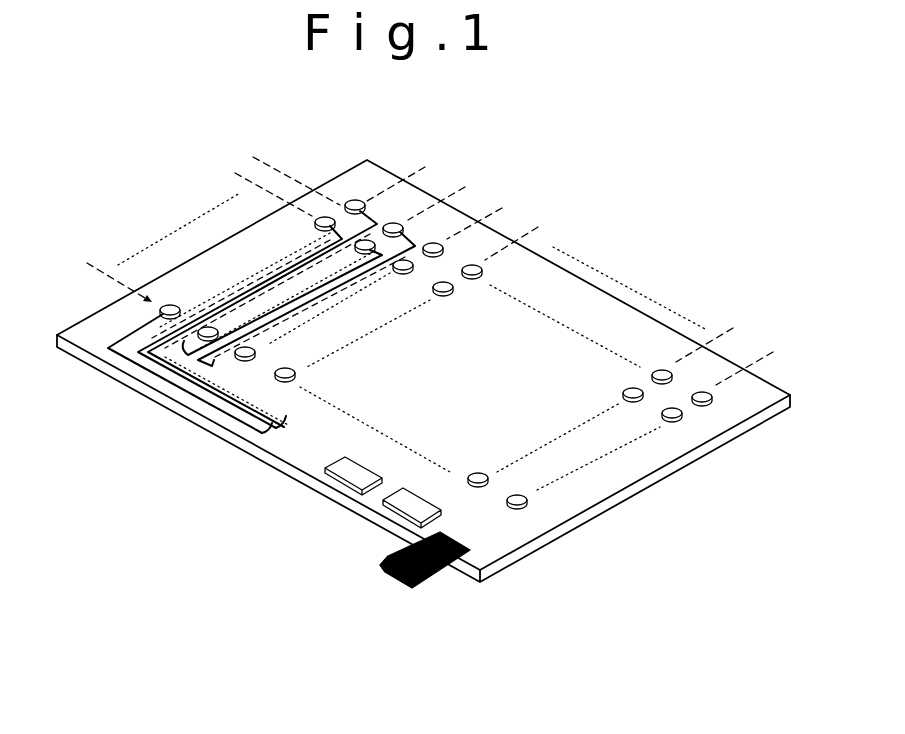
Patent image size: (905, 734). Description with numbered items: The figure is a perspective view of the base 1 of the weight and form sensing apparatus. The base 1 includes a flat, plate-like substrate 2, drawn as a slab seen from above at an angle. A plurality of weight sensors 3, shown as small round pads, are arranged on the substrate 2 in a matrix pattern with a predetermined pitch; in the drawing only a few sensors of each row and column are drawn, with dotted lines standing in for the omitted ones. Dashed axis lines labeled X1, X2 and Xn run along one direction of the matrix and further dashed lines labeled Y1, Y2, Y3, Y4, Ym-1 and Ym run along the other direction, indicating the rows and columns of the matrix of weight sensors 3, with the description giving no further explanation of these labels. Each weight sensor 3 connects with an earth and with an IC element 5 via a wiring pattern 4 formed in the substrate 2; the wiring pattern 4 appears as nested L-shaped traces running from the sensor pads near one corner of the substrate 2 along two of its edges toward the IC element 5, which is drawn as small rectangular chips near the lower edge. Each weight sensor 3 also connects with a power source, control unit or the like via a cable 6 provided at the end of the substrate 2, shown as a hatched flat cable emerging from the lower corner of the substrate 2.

The base 1 is at (652, 268).
The substrate 2 is at (742, 407).
The weight sensors 3 is at (680, 415).
The wiring pattern 4 is at (236, 415).
The IC element 5 is at (346, 473).
The cable 6 is at (434, 574).
The X electrode X1 is at (289, 170).
The X electrode X2 is at (261, 183).
The X electrode Xn is at (103, 271).
The Y electrode Y1 is at (409, 173).
The Y electrode Y2 is at (448, 195).
The Y electrode Y3 is at (486, 216).
The Y electrode Y4 is at (524, 237).
The Y electrode Ym is at (719, 339).
The Y electrode Ym-1 is at (767, 361).